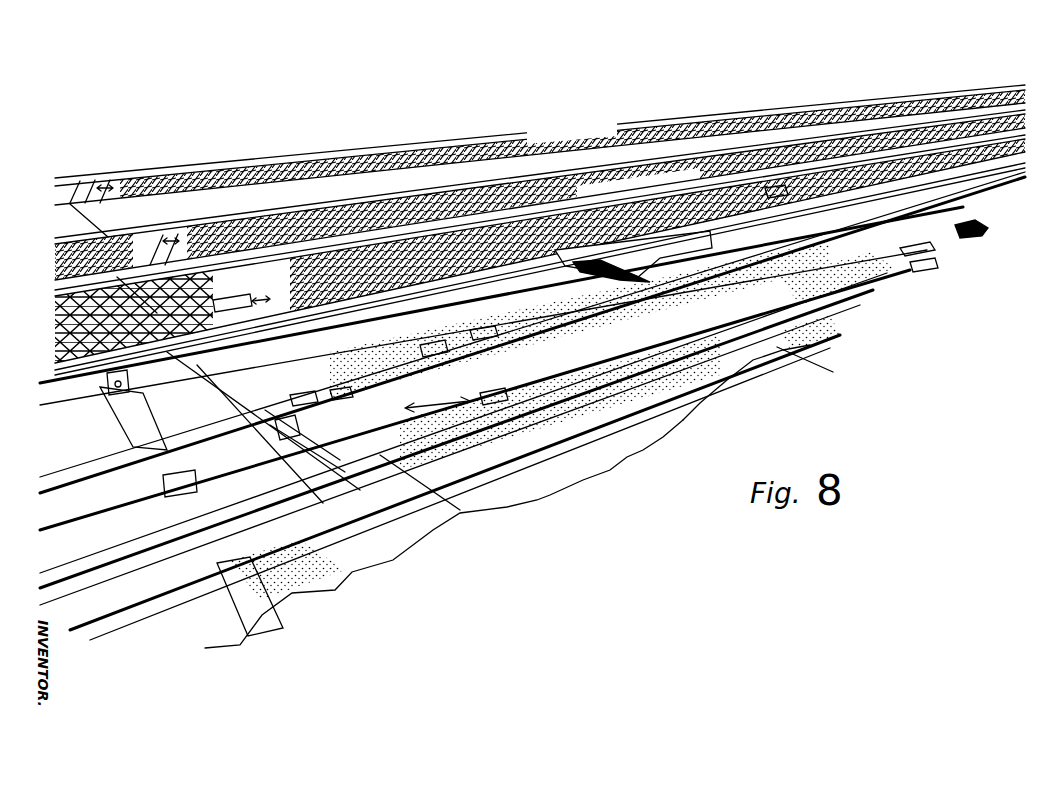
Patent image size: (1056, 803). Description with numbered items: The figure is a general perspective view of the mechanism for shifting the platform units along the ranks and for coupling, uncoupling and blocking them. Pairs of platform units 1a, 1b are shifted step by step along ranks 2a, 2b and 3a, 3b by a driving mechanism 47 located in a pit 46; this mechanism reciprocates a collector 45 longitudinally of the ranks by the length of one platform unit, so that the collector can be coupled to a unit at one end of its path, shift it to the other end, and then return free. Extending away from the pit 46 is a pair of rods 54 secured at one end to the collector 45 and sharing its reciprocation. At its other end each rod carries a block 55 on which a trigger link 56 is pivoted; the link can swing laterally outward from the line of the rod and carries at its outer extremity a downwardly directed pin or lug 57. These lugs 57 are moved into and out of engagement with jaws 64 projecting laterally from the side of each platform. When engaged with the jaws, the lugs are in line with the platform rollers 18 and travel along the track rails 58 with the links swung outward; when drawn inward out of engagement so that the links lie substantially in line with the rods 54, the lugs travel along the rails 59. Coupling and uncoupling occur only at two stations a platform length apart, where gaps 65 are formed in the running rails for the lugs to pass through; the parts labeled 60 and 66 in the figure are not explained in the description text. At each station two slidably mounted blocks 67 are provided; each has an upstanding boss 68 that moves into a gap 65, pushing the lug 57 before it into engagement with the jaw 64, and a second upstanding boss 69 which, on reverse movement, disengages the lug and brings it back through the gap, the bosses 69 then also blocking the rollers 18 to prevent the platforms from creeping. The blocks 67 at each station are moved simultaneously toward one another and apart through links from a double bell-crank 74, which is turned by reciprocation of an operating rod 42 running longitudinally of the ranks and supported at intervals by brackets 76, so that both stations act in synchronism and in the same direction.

The platform unit 1a is at (332, 150).
The platform unit 1b is at (380, 203).
The rank 2a is at (104, 185).
The rank 2b is at (170, 238).
The rank 3a is at (262, 296).
The rank 3b is at (437, 406).
The platform rollers 18 is at (662, 285).
The operating rod 42 is at (345, 572).
The collector 45 is at (978, 194).
The pit 46 is at (990, 178).
The driving mechanism 47 is at (963, 208).
The rods 54 is at (472, 330).
The block 55 is at (430, 345).
The trigger link 56 is at (342, 388).
The pin or lug 57 is at (280, 445).
The track rails 58 is at (490, 392).
The rails 59 is at (303, 393).
The rail end 60 is at (218, 316).
The jaws 64 is at (198, 368).
The gaps 65 is at (888, 274).
The frog 66 is at (962, 236).
The slidably mounted blocks 67 is at (768, 190).
The upstanding boss 68 is at (245, 450).
The second upstanding boss 69 is at (930, 250).
The double bell-crank 74 is at (440, 515).
The brackets 76 is at (872, 288).